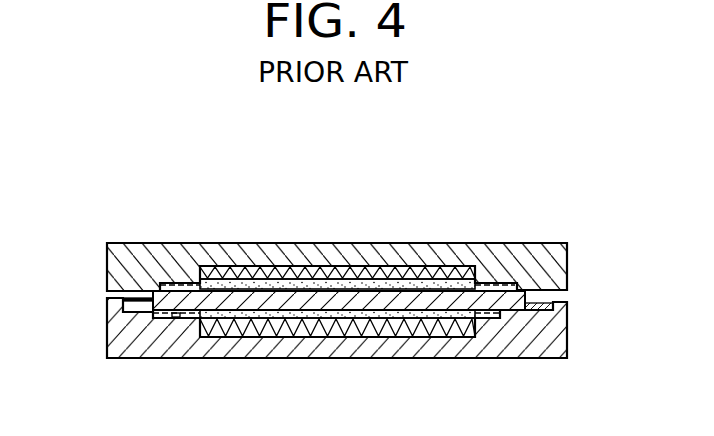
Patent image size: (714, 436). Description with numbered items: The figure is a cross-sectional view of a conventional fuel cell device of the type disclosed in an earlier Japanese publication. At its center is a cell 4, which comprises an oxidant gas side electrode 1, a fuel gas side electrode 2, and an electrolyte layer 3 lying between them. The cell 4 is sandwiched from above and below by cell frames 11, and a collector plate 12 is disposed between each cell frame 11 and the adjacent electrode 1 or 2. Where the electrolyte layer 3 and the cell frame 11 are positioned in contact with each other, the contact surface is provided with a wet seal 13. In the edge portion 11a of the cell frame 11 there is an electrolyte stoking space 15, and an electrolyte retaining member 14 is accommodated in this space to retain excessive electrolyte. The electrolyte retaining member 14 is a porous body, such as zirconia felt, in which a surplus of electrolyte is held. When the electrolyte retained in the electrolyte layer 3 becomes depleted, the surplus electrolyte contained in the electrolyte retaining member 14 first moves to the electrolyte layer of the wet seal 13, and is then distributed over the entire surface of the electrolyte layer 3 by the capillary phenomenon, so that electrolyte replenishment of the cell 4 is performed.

The oxidant gas side electrode 1 is at (348, 340).
The fuel gas side electrode 2 is at (392, 268).
The electrolyte layer 3 is at (178, 297).
The cell 4 is at (460, 302).
The cell frame 11 is at (136, 263).
The edge portion 11a is at (127, 317).
The collector plate 12 is at (256, 272).
The wet seal 13 is at (495, 280).
The electrolyte retaining member 14 is at (142, 313).
The electrolyte stoking space 15 is at (530, 312).